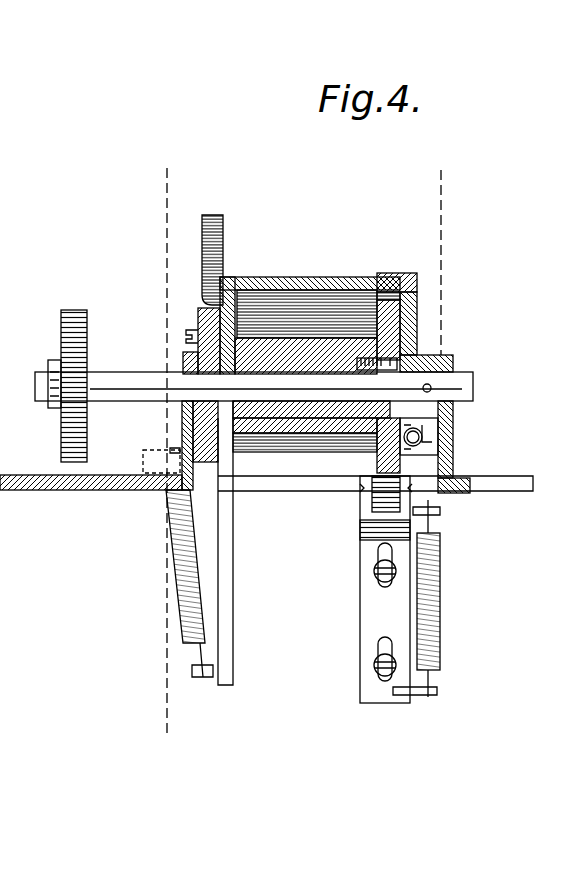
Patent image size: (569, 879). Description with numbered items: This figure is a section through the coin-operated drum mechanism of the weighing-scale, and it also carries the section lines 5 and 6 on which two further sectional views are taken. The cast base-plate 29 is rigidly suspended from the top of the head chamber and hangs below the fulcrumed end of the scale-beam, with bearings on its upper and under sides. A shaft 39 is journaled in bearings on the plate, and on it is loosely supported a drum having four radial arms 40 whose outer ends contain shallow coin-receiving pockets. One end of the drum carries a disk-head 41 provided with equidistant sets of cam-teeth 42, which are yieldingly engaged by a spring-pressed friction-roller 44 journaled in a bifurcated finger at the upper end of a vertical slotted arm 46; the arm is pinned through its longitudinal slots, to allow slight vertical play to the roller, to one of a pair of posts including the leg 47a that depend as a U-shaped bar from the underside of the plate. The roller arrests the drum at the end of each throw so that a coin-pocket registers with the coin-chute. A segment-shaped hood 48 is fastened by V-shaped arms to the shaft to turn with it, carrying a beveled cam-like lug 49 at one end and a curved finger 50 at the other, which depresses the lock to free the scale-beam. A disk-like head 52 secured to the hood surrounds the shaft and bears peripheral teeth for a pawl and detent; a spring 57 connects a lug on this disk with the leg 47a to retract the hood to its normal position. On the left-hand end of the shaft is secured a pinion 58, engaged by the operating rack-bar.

The section line 5 is at (120, 182).
The section line 6 is at (488, 183).
The base-plate 29 is at (68, 490).
The shaft 39 is at (115, 374).
The radial arms 40 is at (270, 338).
The disk-head 41 is at (397, 322).
The cam-teeth 42 is at (412, 293).
The friction-roller 44 is at (384, 496).
The vertical slotted arm 46 is at (377, 617).
The post 47a is at (220, 612).
The segment-shaped hood 48 is at (313, 278).
The cam-like lug 49 is at (388, 276).
The curved finger 50 is at (215, 250).
The disk-like head 52 is at (197, 312).
The spring 57 is at (188, 579).
The pinion 58 is at (73, 318).